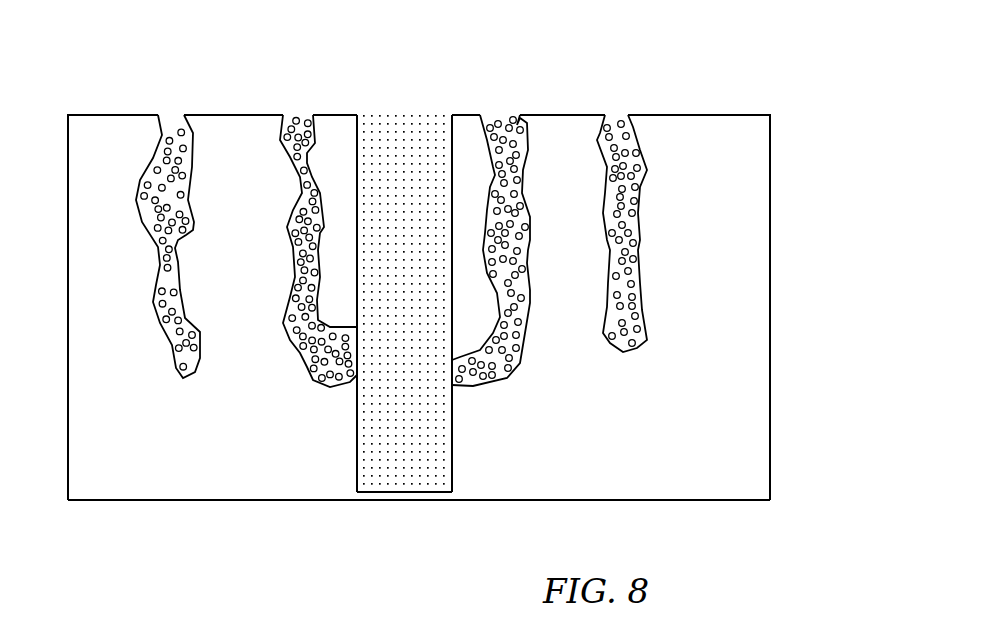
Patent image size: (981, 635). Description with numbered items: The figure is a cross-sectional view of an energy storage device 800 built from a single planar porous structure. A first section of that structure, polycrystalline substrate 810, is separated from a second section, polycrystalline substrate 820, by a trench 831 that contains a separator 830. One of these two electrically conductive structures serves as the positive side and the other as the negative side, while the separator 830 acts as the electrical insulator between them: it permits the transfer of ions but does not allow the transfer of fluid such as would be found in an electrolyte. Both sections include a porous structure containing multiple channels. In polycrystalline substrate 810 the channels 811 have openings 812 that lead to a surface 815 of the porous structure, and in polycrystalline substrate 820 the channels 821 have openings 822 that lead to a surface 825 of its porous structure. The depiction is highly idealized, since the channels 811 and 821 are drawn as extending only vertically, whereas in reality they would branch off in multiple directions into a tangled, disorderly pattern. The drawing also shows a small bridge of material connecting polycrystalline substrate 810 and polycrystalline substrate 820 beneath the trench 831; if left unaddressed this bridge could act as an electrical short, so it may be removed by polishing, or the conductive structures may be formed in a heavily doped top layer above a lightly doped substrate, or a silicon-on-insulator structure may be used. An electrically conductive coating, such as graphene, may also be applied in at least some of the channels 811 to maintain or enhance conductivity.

The energy storage device 800 is at (790, 108).
The polycrystalline substrate 810 is at (117, 460).
The channels 811 is at (293, 365).
The openings 812 is at (167, 108).
The surface 815 is at (265, 120).
The polycrystalline substrate 820 is at (722, 473).
The channels 821 is at (513, 380).
The openings 822 is at (500, 108).
The surface 825 is at (678, 122).
The separator 830 is at (403, 145).
The trench 831 is at (412, 493).